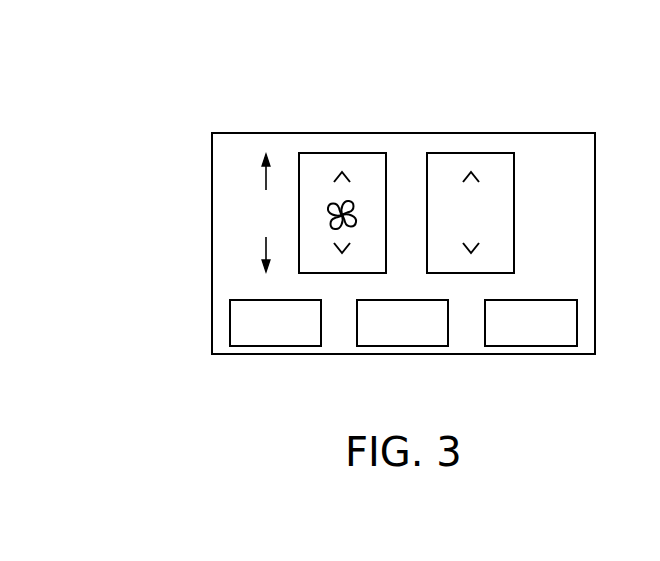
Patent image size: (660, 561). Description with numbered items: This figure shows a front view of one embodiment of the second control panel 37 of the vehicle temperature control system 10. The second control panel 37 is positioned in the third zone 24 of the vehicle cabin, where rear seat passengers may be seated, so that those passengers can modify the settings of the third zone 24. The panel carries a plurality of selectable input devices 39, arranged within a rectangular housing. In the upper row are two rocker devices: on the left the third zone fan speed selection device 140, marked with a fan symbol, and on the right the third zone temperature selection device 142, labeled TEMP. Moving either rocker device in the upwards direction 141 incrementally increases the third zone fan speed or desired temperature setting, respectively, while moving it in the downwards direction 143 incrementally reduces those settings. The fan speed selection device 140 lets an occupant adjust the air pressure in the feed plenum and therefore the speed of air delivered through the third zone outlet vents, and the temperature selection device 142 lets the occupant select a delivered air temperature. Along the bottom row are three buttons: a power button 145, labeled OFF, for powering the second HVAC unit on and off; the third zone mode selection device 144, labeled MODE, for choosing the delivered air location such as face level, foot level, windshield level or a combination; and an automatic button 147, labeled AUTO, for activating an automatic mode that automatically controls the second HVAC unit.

The vehicle temperature control system 10 is at (175, 122).
The third zone 24 is at (288, 131).
The second control panel 37 is at (595, 145).
The selectable input devices 39 is at (352, 131).
The third zone fan speed selection device 140 is at (299, 222).
The upwards direction 141 is at (262, 182).
The third zone temperature selection device 142 is at (514, 202).
The downwards direction 143 is at (263, 252).
The third zone mode selection device 144 is at (428, 346).
The power button 145 is at (288, 346).
The automatic button 147 is at (552, 346).